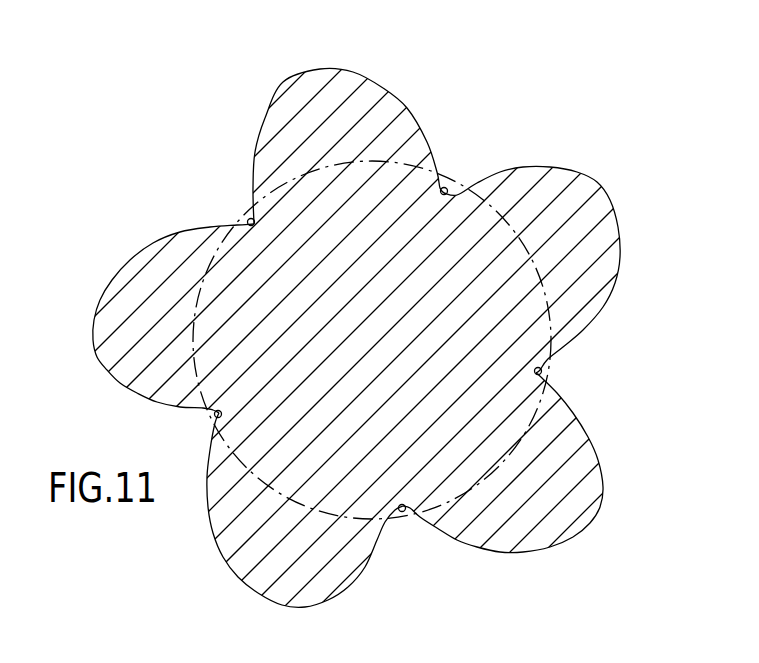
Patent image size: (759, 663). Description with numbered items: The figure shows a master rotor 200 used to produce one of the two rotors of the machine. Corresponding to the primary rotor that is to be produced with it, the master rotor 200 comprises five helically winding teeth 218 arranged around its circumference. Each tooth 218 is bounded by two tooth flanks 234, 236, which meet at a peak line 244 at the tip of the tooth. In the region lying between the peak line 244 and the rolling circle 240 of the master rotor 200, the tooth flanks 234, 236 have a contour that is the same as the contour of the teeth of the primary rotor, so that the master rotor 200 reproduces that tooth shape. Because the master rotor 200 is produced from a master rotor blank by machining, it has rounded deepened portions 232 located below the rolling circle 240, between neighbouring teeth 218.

The master rotor 200 is at (403, 64).
The helically winding tooth 218 is at (257, 583).
The rounded deepened portion 232 is at (405, 511).
The tooth flank 234 is at (356, 572).
The tooth flank 236 is at (468, 548).
The rolling circle 240 is at (272, 497).
The peak line 244 is at (280, 607).